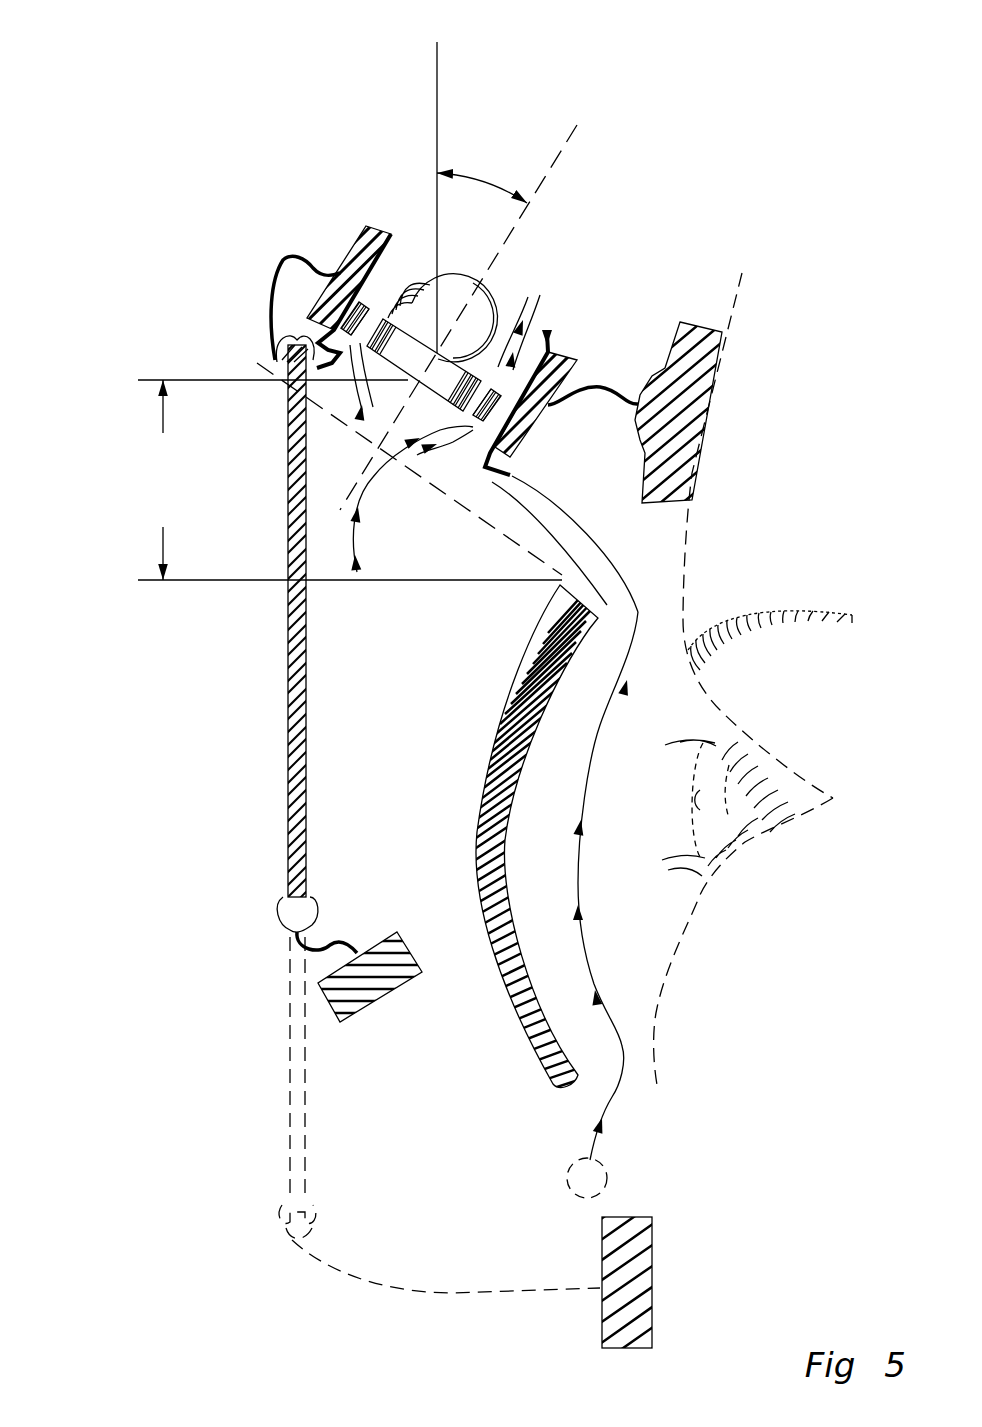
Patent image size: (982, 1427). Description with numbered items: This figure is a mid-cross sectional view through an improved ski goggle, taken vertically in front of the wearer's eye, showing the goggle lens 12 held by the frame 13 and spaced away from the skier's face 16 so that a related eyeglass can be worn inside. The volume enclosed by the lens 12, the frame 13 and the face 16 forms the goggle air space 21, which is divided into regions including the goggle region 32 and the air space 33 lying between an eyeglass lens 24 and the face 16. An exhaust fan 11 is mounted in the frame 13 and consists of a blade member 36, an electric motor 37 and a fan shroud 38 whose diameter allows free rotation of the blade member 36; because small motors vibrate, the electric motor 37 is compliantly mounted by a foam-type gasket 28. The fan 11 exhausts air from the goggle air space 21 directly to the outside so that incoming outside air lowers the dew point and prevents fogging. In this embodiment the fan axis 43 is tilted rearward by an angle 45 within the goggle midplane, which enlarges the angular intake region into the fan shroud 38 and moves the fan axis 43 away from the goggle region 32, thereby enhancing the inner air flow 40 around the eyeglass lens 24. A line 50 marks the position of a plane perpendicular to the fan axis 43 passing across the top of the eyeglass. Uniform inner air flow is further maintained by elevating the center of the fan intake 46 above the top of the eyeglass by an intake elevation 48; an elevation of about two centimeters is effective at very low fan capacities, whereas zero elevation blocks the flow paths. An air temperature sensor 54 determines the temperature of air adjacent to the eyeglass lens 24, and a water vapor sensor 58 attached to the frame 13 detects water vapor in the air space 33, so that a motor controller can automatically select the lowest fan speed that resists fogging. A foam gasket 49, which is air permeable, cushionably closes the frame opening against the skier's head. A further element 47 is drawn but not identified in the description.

The exhaust fan 11 is at (421, 361).
The goggle lens 12 is at (178, 1038).
The frame 13 is at (369, 813).
The face 16 is at (743, 679).
The goggle air space 21 is at (675, 544).
The eyeglass lens 24 is at (640, 828).
The gasket 28 is at (419, 316).
The goggle region 32 is at (774, 743).
The air space 33 is at (345, 621).
The blade member 36 is at (370, 161).
The electric motor 37 is at (547, 246).
The fan shroud 38 is at (763, 255).
The inner air flow 40 is at (694, 905).
The fan axis 43 is at (512, 313).
The angle 45 is at (543, 195).
The fan intake 46 is at (423, 492).
The vent passage 47 is at (496, 243).
The intake elevation 48 is at (273, 480).
The foam gasket 49 is at (575, 828).
The line 50 is at (345, 645).
The air temperature sensor 54 is at (290, 397).
The water vapor sensor 58 is at (562, 433).